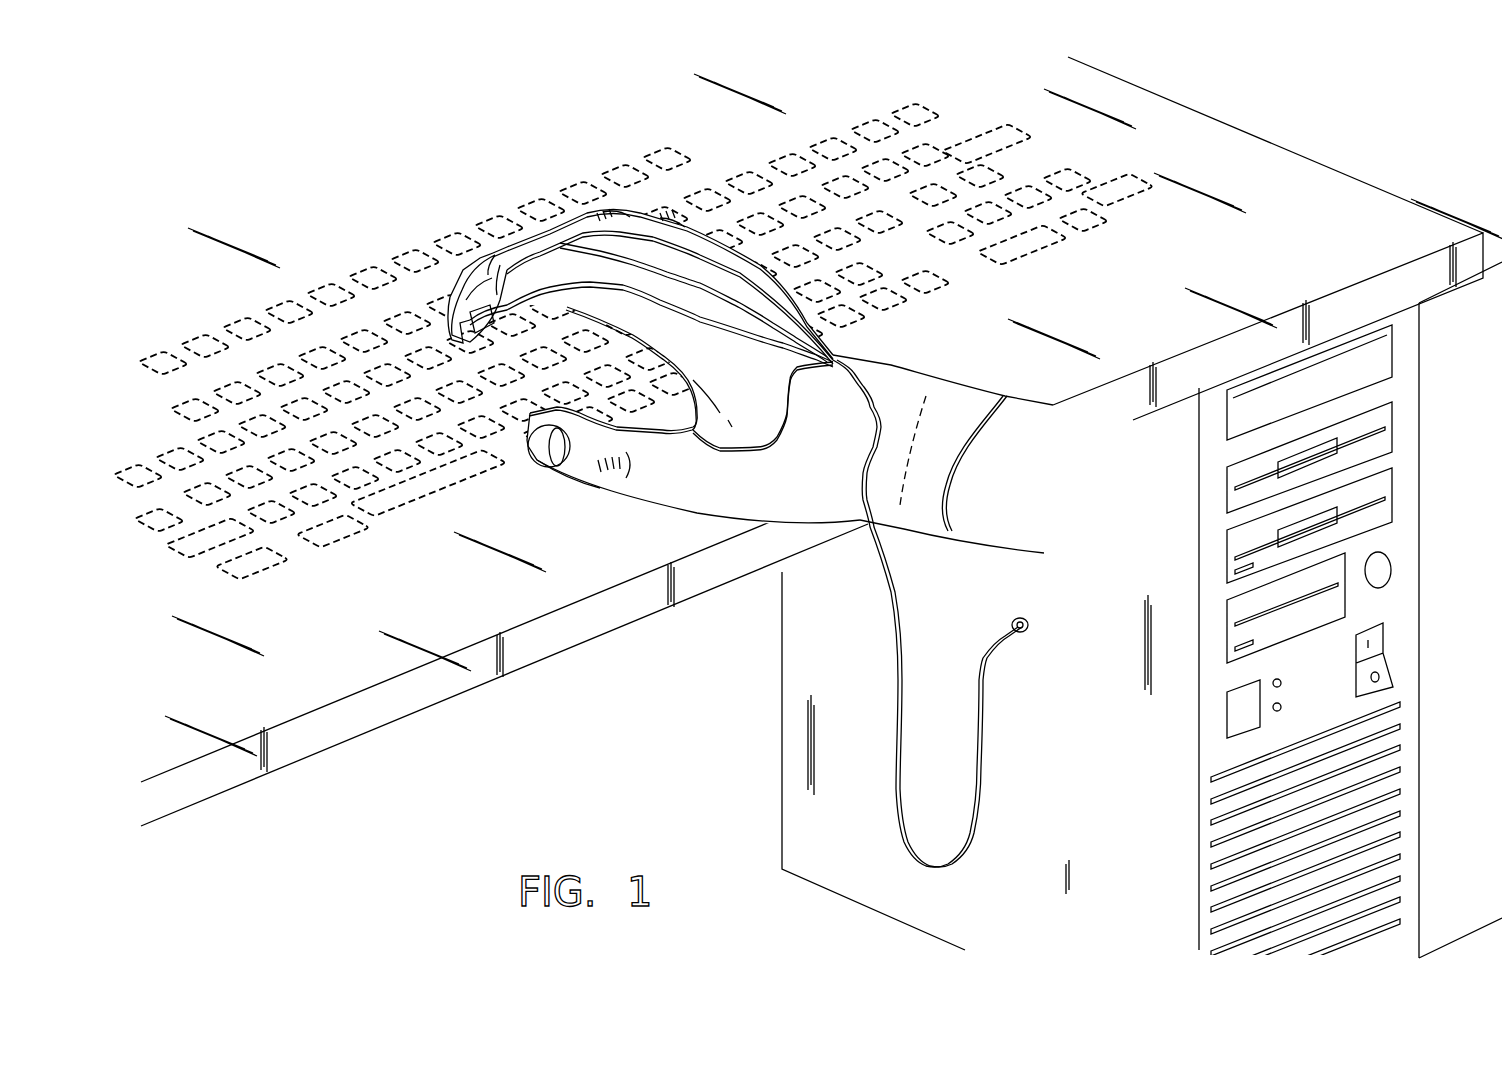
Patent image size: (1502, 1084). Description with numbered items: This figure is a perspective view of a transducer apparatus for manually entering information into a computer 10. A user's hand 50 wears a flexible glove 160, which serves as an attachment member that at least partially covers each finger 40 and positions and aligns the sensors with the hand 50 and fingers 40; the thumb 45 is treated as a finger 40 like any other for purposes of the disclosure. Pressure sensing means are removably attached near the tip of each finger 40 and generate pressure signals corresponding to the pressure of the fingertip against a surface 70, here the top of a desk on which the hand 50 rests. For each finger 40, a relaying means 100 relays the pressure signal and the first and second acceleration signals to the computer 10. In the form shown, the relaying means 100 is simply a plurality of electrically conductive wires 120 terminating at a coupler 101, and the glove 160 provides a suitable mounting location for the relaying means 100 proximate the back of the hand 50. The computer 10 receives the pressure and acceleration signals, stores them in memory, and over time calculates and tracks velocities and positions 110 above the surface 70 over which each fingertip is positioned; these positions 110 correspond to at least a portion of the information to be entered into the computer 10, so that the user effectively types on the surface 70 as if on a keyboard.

The computer 10 is at (1410, 603).
The finger 40 is at (657, 212).
The thumb 45 is at (573, 470).
The hand 50 is at (790, 268).
The surface 70 is at (409, 584).
The relaying means 100 is at (880, 368).
The coupler 101 is at (1022, 619).
The positions 110 is at (426, 355).
The electrically conductive wires 120 is at (860, 463).
The glove 160 is at (926, 537).